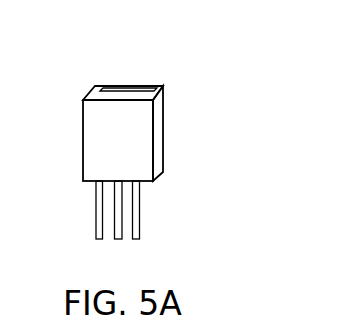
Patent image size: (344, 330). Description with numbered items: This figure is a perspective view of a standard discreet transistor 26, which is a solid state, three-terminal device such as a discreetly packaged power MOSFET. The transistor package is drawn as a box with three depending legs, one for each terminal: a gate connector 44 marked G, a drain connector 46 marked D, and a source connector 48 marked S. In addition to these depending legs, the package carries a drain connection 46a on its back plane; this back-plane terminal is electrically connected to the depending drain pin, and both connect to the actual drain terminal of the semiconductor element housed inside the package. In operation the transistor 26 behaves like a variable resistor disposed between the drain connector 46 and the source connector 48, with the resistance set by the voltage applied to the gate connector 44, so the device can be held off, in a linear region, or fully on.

The transistor 26 is at (180, 100).
The drain connection 46a is at (112, 85).
The drain connector marking D is at (141, 80).
The gate connector 44 is at (96, 220).
The drain connector 46 is at (118, 235).
The source connector 48 is at (140, 220).